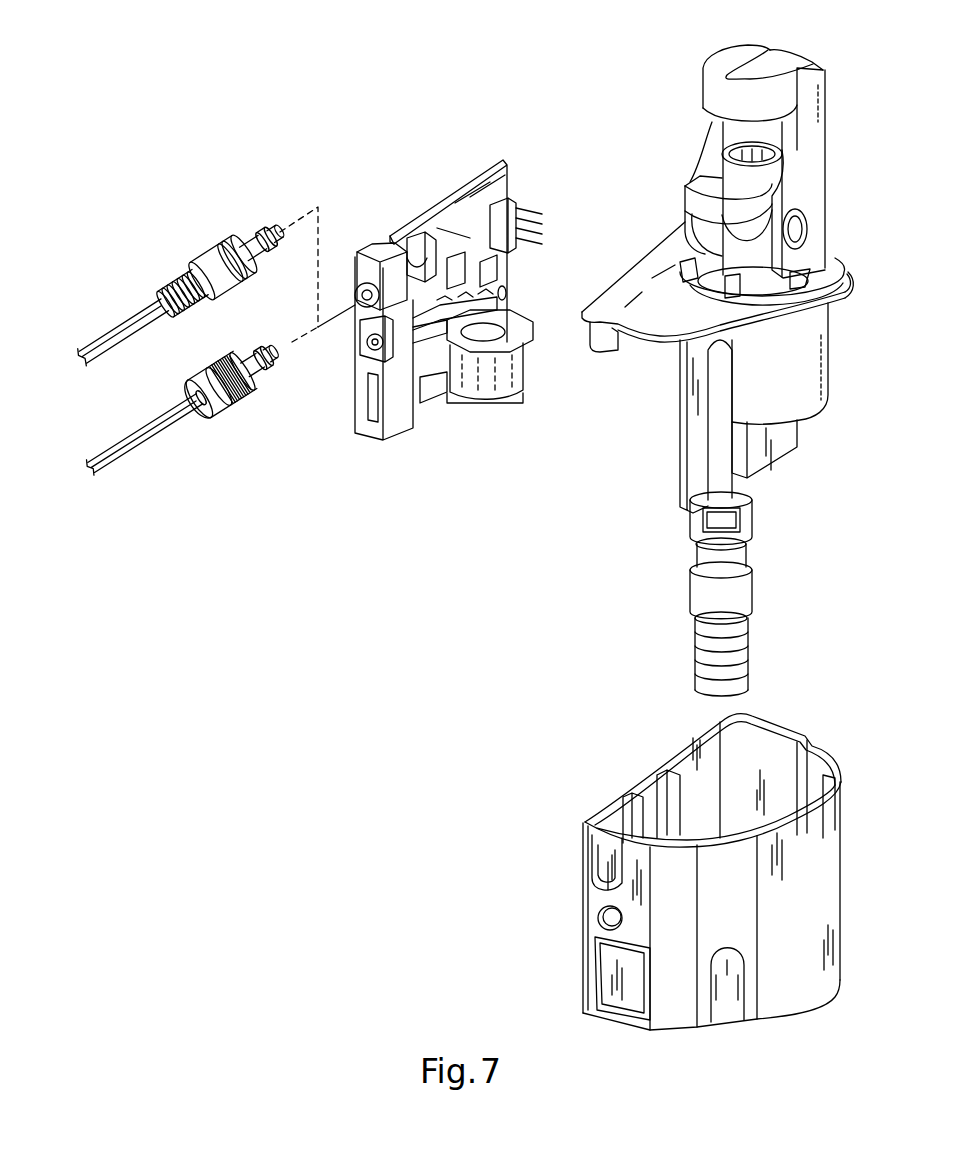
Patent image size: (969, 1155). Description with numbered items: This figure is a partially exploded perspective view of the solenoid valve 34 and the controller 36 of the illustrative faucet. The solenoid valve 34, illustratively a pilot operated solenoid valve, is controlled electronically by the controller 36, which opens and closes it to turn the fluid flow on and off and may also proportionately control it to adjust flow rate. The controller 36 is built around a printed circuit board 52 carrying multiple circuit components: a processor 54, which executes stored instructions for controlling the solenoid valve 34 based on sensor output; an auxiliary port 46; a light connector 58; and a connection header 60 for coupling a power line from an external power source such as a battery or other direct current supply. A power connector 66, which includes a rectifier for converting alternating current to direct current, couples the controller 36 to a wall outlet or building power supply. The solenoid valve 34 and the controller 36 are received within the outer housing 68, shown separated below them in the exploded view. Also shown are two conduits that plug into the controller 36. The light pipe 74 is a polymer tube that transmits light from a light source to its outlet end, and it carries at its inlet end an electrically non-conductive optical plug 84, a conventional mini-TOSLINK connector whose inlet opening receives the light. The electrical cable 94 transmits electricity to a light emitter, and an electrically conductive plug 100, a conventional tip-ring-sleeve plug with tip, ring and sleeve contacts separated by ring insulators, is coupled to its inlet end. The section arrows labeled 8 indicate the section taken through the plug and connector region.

The solenoid valve 34 is at (645, 450).
The controller 36 is at (462, 253).
The auxiliary port 46 is at (400, 432).
The printed circuit board 52 is at (480, 175).
The processor 54 is at (508, 270).
The light connector 58 is at (383, 255).
The connection header 60 is at (527, 200).
The power connector 66 is at (355, 345).
The outer housing 68 is at (635, 917).
The light pipe 74 is at (123, 458).
The optical plug 84 is at (268, 367).
The electrical cable 94 is at (117, 325).
The electrically conductive plug 100 is at (268, 232).
The section line 8- 8 is at (467, 233).